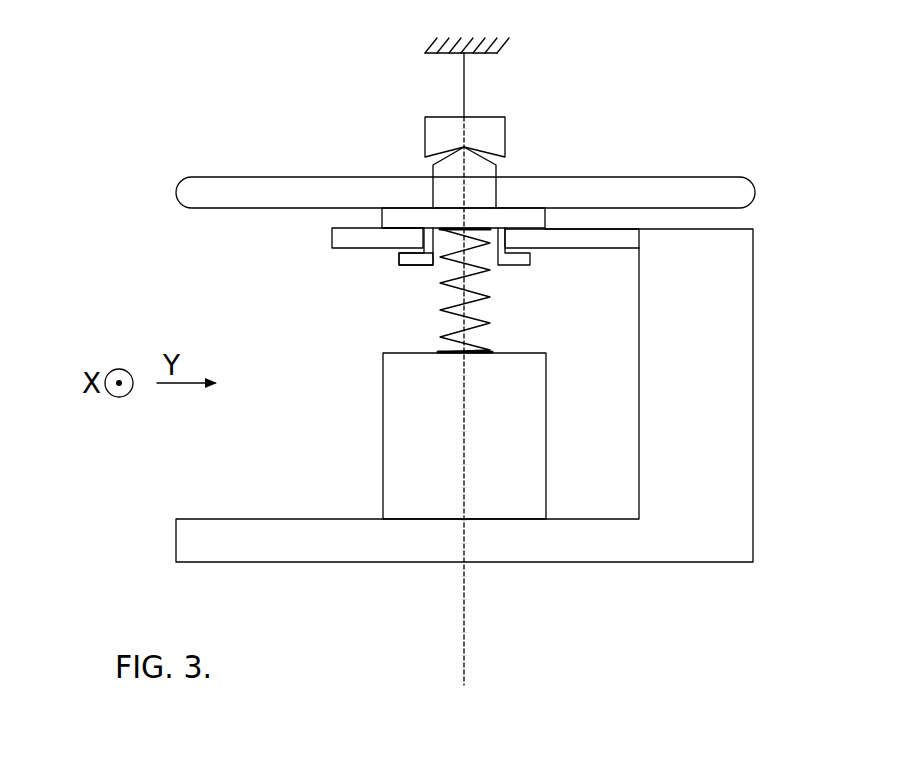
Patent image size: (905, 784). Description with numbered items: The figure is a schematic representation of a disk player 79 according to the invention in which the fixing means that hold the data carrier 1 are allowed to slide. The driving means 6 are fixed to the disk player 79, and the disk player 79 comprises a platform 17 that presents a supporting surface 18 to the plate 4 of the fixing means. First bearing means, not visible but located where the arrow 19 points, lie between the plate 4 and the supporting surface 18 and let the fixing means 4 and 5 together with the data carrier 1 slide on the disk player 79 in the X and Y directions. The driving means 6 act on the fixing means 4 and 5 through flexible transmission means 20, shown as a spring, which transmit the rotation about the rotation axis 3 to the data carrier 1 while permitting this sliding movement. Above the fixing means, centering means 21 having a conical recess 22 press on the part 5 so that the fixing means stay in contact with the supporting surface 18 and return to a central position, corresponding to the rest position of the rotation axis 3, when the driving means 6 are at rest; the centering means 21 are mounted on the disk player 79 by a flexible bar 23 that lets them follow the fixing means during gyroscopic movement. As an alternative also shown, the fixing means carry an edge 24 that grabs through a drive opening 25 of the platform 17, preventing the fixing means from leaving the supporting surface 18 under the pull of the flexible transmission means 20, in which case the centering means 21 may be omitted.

The data carrier 1 is at (693, 197).
The rotation axis 3 is at (464, 636).
The plate 4 is at (413, 213).
The part of the fixing means 5 is at (498, 112).
The driving means 6 is at (464, 436).
The platform 17 is at (348, 242).
The supporting surface 18 is at (393, 228).
The first bearing means 19 is at (383, 228).
The flexible transmission means 20 is at (490, 323).
The centering means 21 is at (490, 126).
The conical recess 22 is at (477, 147).
The flexible bar 23 is at (464, 85).
The edge 24 is at (413, 265).
The drive opening 25 is at (507, 238).
The disk player 79 is at (497, 53).